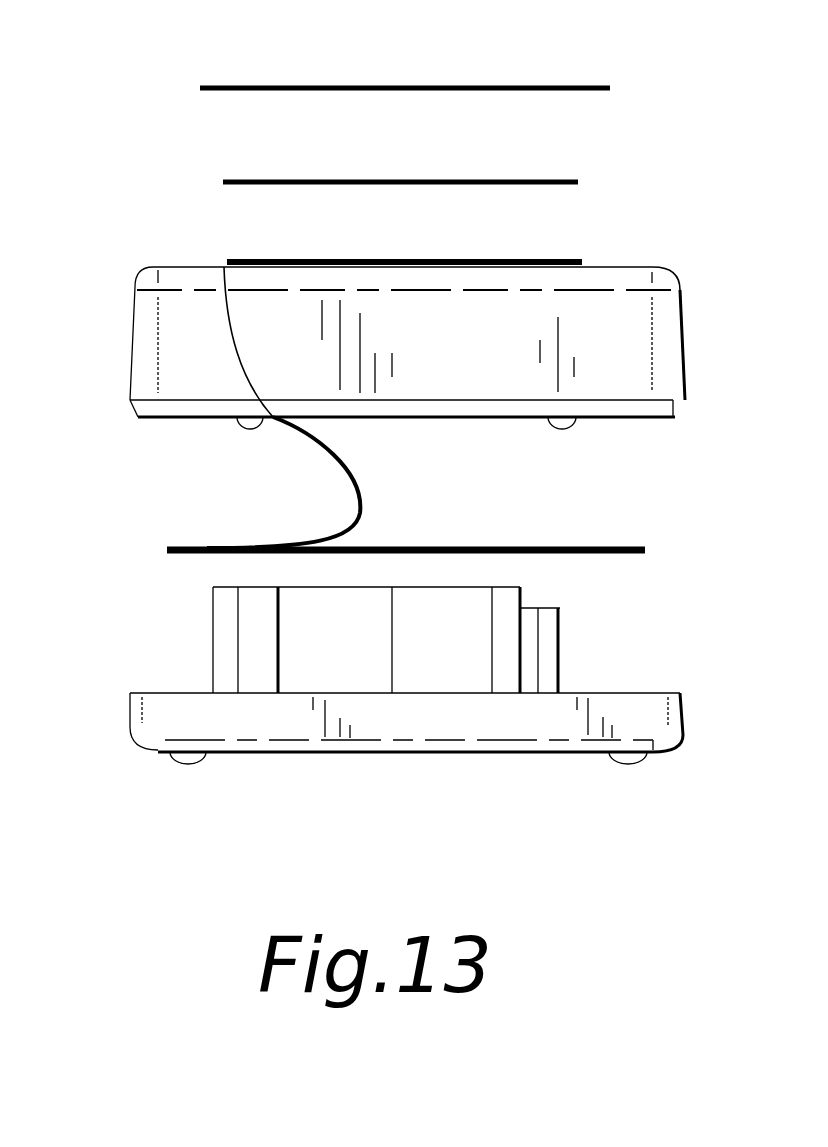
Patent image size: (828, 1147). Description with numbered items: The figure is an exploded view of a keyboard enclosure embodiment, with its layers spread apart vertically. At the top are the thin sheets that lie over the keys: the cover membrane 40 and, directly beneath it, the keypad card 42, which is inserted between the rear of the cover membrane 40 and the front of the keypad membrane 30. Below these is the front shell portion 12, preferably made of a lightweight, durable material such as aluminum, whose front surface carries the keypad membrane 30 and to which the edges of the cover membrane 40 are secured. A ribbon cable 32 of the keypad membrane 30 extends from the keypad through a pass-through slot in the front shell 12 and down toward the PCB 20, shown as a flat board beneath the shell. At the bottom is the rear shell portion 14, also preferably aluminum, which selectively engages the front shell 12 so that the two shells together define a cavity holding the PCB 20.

The front shell portion 12 is at (133, 302).
The rear shell portion 14 is at (130, 713).
The PCB 20 is at (223, 557).
The keypad membrane 30 is at (277, 258).
The ribbon cable 32 is at (347, 460).
The cover membrane 40 is at (330, 84).
The keypad card 42 is at (337, 178).